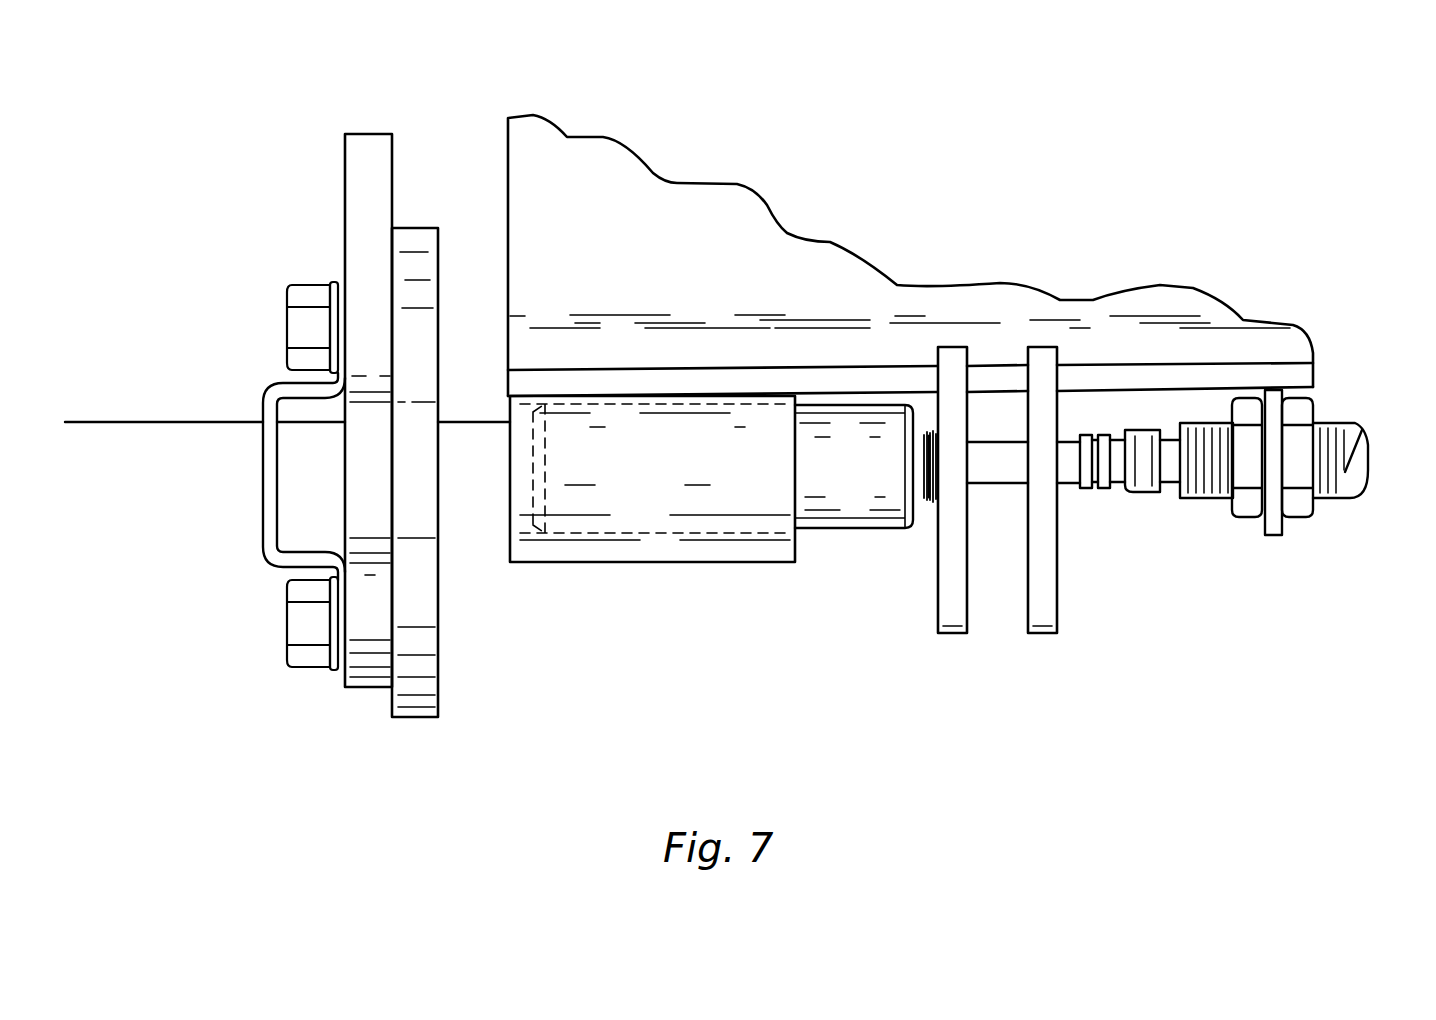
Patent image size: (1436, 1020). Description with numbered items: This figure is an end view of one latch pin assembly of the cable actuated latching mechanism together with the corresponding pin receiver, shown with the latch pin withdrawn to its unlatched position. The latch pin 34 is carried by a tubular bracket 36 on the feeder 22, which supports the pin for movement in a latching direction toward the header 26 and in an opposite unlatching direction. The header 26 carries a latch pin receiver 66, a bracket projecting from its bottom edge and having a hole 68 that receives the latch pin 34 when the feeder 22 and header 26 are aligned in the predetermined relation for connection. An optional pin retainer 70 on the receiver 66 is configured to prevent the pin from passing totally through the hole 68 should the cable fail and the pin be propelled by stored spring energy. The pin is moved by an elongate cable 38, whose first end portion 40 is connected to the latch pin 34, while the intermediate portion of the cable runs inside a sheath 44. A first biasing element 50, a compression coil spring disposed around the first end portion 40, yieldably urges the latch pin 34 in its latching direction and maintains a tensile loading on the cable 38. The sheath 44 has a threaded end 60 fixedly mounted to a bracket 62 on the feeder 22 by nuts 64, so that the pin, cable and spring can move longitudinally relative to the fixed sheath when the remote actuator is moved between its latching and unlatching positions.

The feeder 22 is at (508, 170).
The header 26 is at (132, 426).
The latch pin 34 is at (850, 530).
The tubular bracket 36 is at (662, 562).
The cable 38 is at (1015, 486).
The first end portion 40 is at (1042, 490).
The sheath 44 is at (1337, 425).
The first biasing element 50 is at (929, 505).
The threaded end 60 is at (1340, 460).
The bracket 62 is at (1275, 535).
The nuts 64 is at (1238, 517).
The latch pin receiver 66 is at (420, 720).
The hole 68 is at (358, 527).
The pin retainer 70 is at (260, 508).